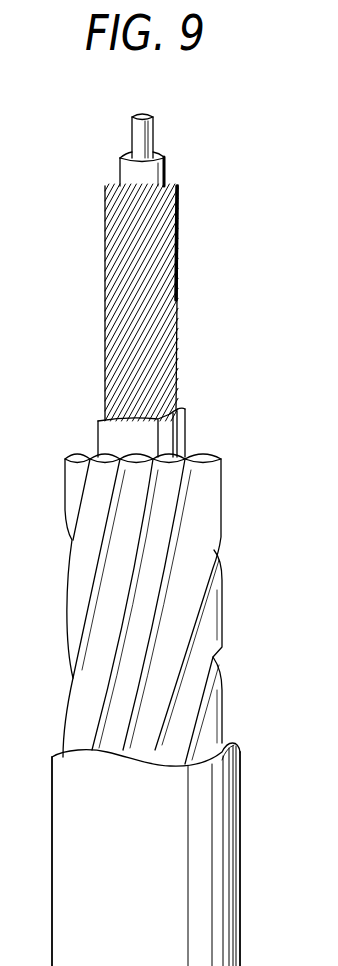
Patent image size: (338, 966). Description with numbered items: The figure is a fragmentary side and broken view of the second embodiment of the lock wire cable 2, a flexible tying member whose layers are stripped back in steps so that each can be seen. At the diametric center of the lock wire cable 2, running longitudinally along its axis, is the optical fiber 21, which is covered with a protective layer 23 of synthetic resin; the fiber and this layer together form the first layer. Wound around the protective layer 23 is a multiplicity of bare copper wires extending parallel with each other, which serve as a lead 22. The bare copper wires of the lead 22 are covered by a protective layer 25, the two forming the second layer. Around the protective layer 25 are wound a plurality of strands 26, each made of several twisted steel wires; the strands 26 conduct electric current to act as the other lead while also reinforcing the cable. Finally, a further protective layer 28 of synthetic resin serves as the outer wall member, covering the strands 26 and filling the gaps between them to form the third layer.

The lock wire cable 2 is at (224, 333).
The optical fiber 21 is at (148, 133).
The lead 22 is at (158, 283).
The protective layer 23 is at (160, 170).
The protective layer 25 is at (173, 435).
The strands 26 is at (65, 486).
The protective layer 28 is at (230, 790).